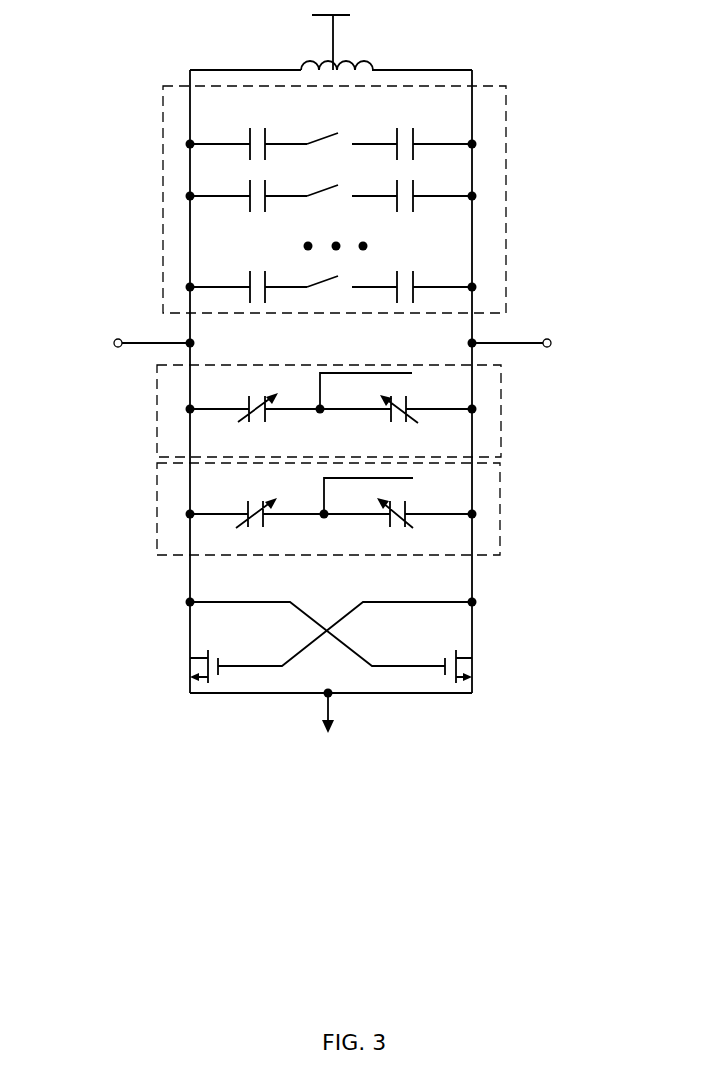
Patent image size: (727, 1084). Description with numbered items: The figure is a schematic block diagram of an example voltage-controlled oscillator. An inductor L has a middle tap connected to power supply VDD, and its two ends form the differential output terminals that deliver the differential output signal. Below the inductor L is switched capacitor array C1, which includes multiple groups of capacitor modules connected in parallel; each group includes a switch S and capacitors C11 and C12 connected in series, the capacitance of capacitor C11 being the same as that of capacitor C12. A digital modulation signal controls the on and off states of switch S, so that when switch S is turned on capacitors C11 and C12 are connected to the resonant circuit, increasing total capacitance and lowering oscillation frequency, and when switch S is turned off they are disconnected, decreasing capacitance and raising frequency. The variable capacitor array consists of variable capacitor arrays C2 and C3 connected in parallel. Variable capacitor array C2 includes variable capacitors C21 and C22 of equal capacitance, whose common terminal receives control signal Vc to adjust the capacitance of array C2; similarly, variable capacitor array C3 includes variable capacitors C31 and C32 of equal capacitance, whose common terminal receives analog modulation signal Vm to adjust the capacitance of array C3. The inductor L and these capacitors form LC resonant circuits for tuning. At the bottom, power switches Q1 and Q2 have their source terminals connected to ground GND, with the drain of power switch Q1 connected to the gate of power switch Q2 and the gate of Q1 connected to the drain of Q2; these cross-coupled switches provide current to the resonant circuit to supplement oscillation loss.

The power supply VDD is at (300, 35).
The inductor L is at (323, 58).
The switched capacitor array C1 is at (360, 199).
The capacitor C11 is at (248, 201).
The switch S is at (324, 193).
The capacitor C12 is at (412, 201).
The variable capacitor array C2 is at (351, 411).
The variable capacitor C21 is at (255, 422).
The variable capacitor C22 is at (396, 423).
The control signal Vc is at (378, 390).
The variable capacitor array C3 is at (350, 509).
The variable capacitor C31 is at (257, 525).
The variable capacitor C32 is at (398, 525).
The analog modulation signal Vm is at (383, 495).
The power switch Q1 is at (188, 666).
The power switch Q2 is at (476, 666).
The ground GND is at (339, 726).